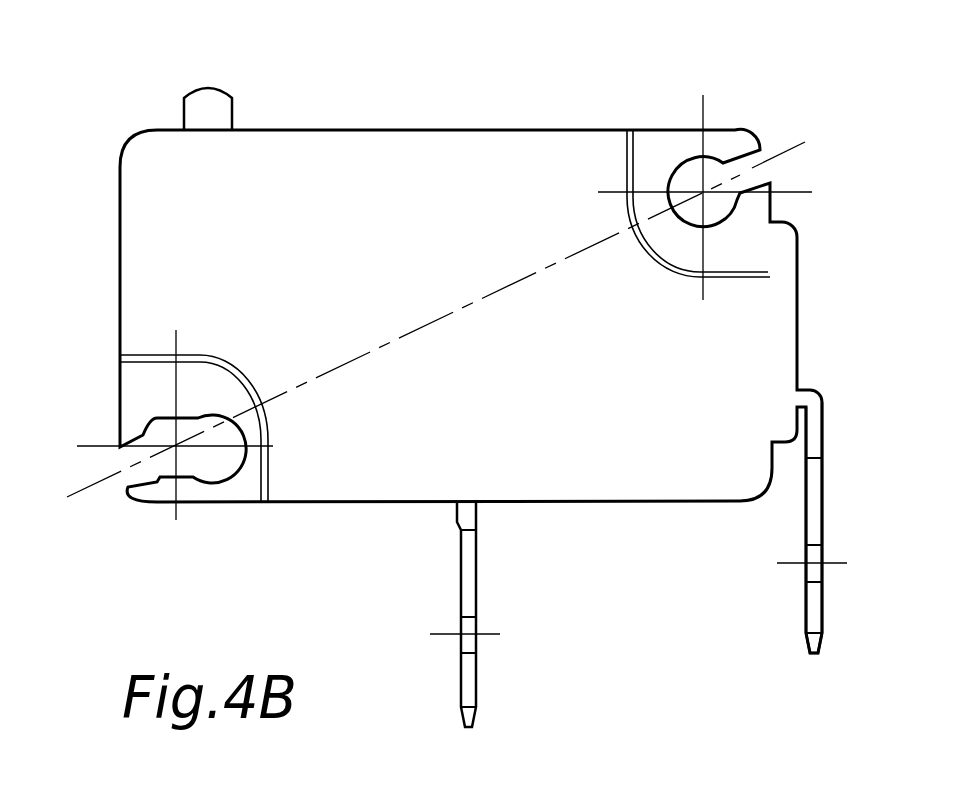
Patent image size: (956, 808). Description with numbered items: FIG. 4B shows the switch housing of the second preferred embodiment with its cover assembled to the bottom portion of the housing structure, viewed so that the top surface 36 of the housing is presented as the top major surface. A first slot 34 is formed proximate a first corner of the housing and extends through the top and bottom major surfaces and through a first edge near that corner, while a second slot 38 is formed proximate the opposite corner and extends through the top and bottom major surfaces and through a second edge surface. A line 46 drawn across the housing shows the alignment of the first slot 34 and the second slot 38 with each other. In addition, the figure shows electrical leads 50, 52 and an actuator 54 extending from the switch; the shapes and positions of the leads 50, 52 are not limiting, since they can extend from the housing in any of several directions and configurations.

The first slot 34 is at (763, 173).
The top surface 36 is at (372, 217).
The second slot 38 is at (112, 465).
The alignment line 46 is at (458, 310).
The electrical lead 50 is at (461, 585).
The electrical lead 52 is at (805, 530).
The actuator 54 is at (205, 102).